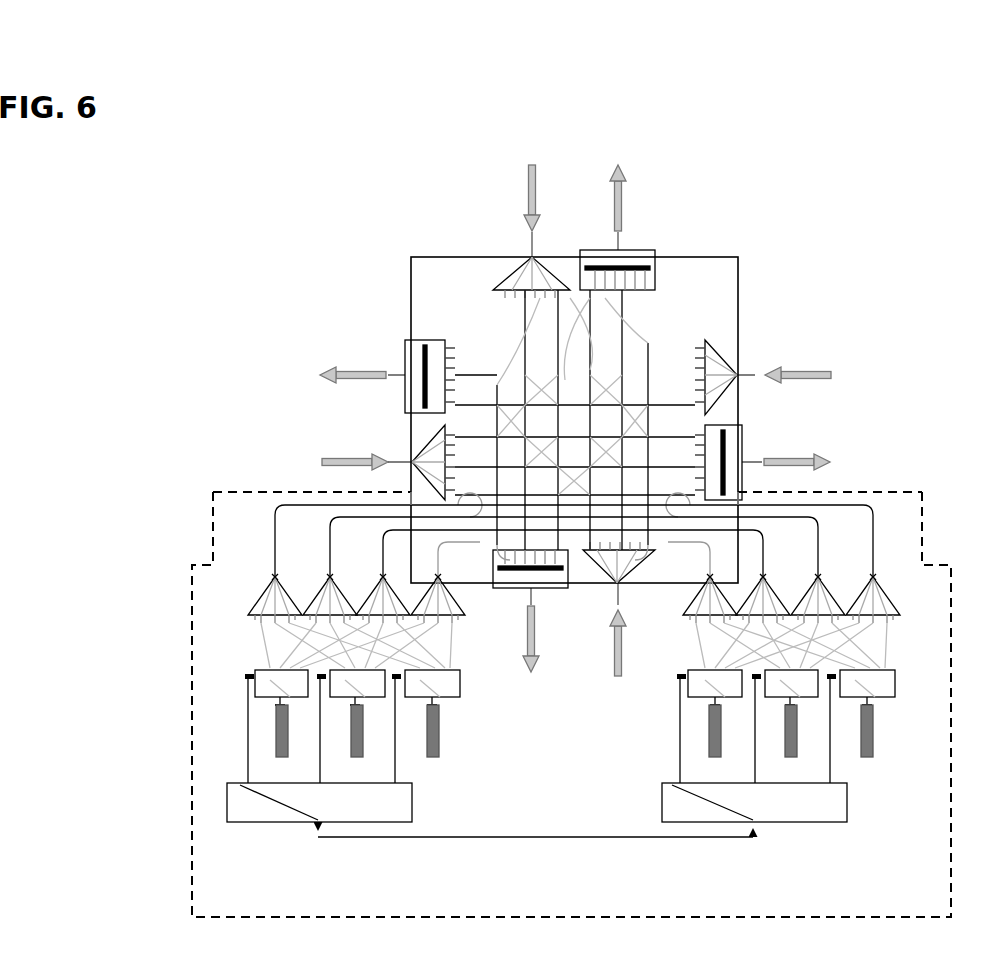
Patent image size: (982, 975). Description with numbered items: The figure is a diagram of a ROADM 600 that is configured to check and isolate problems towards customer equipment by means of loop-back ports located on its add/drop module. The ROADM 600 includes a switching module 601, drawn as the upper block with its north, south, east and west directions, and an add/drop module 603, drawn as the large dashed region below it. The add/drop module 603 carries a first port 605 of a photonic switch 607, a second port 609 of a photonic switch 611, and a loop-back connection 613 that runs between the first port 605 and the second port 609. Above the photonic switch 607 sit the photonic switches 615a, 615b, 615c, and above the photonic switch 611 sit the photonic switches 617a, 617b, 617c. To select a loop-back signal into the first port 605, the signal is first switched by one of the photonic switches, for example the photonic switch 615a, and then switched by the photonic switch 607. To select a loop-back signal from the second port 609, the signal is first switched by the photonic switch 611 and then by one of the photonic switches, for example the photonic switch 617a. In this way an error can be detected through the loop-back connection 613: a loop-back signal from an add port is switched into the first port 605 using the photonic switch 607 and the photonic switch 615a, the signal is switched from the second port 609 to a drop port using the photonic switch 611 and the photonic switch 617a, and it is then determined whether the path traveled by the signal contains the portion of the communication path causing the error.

The ROADM 600 is at (219, 251).
The switching module 601 is at (408, 289).
The add/drop module 603 is at (186, 613).
The first port 605 is at (316, 842).
The photonic switch 607 is at (253, 826).
The second port 609 is at (750, 843).
The photonic switch 611 is at (826, 826).
The loop-back connection 613 is at (526, 841).
The photonic switch 615a is at (250, 699).
The photonic switch 615b is at (345, 699).
The photonic switch 615c is at (455, 700).
The photonic switch 617a is at (690, 699).
The photonic switch 617b is at (778, 699).
The photonic switch 617c is at (883, 700).